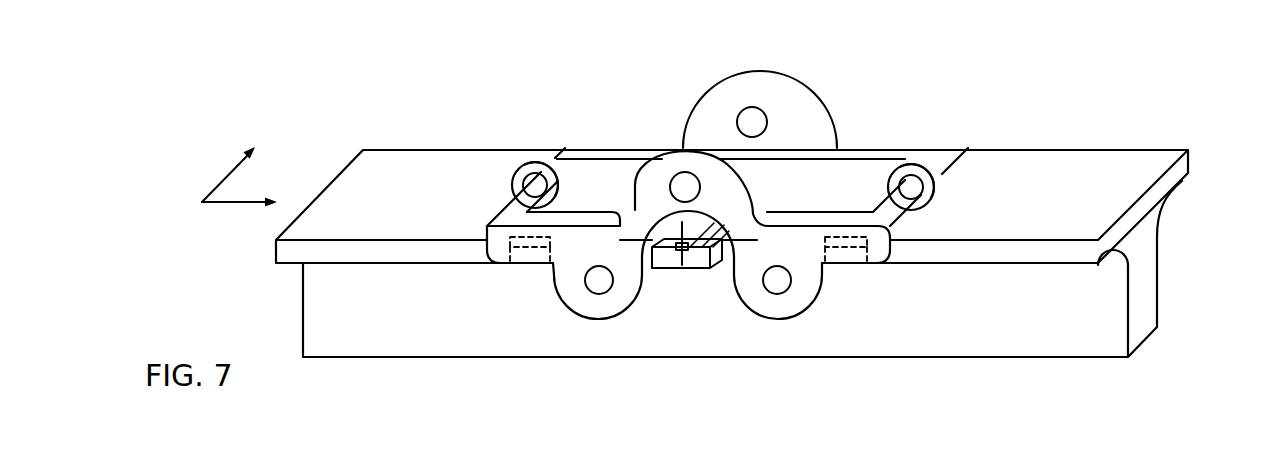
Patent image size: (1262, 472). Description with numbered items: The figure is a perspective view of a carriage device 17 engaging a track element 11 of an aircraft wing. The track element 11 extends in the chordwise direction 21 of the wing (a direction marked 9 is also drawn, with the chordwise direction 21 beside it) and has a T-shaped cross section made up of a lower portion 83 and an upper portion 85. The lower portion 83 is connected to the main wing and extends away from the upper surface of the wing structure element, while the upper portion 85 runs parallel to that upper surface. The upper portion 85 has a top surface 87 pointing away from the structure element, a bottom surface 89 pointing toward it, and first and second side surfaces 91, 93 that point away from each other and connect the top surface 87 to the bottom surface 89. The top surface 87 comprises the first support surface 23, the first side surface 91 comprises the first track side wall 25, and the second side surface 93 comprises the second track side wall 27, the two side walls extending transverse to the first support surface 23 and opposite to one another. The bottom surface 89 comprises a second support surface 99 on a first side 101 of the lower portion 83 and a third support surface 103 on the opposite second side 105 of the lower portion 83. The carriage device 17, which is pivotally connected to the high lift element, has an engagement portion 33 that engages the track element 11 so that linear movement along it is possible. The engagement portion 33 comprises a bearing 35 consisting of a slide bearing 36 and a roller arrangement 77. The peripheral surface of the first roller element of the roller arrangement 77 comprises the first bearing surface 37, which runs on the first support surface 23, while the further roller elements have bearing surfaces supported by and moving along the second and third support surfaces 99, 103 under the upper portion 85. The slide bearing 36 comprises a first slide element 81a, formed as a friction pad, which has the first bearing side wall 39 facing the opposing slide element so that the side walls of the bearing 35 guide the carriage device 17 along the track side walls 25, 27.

The first direction 9 is at (222, 177).
The chordwise direction 21 is at (230, 202).
The track element 11 is at (1117, 160).
The carriage device 17 is at (803, 137).
The first support surface 23 is at (980, 190).
The first track side wall 25 is at (1007, 253).
The second track side wall 27 is at (1002, 149).
The engagement portion 33 is at (566, 150).
The bearing 35 is at (643, 258).
The slide bearing 36 is at (690, 268).
The first bearing surface 37 is at (512, 188).
The first bearing side wall 39 is at (726, 262).
The roller arrangement 77 is at (778, 283).
The first slide element 81a is at (664, 263).
The lower portion 83 is at (1143, 283).
The upper portion 85 is at (1188, 160).
The top surface 87 is at (1148, 156).
The bottom surface 89 is at (1191, 184).
The first side surface 91 is at (1007, 253).
The second side surface 93 is at (1002, 149).
The second support surface 99 is at (1090, 268).
The first side 101 is at (1120, 306).
The third support surface 103 is at (1188, 197).
The second side 105 is at (1168, 248).